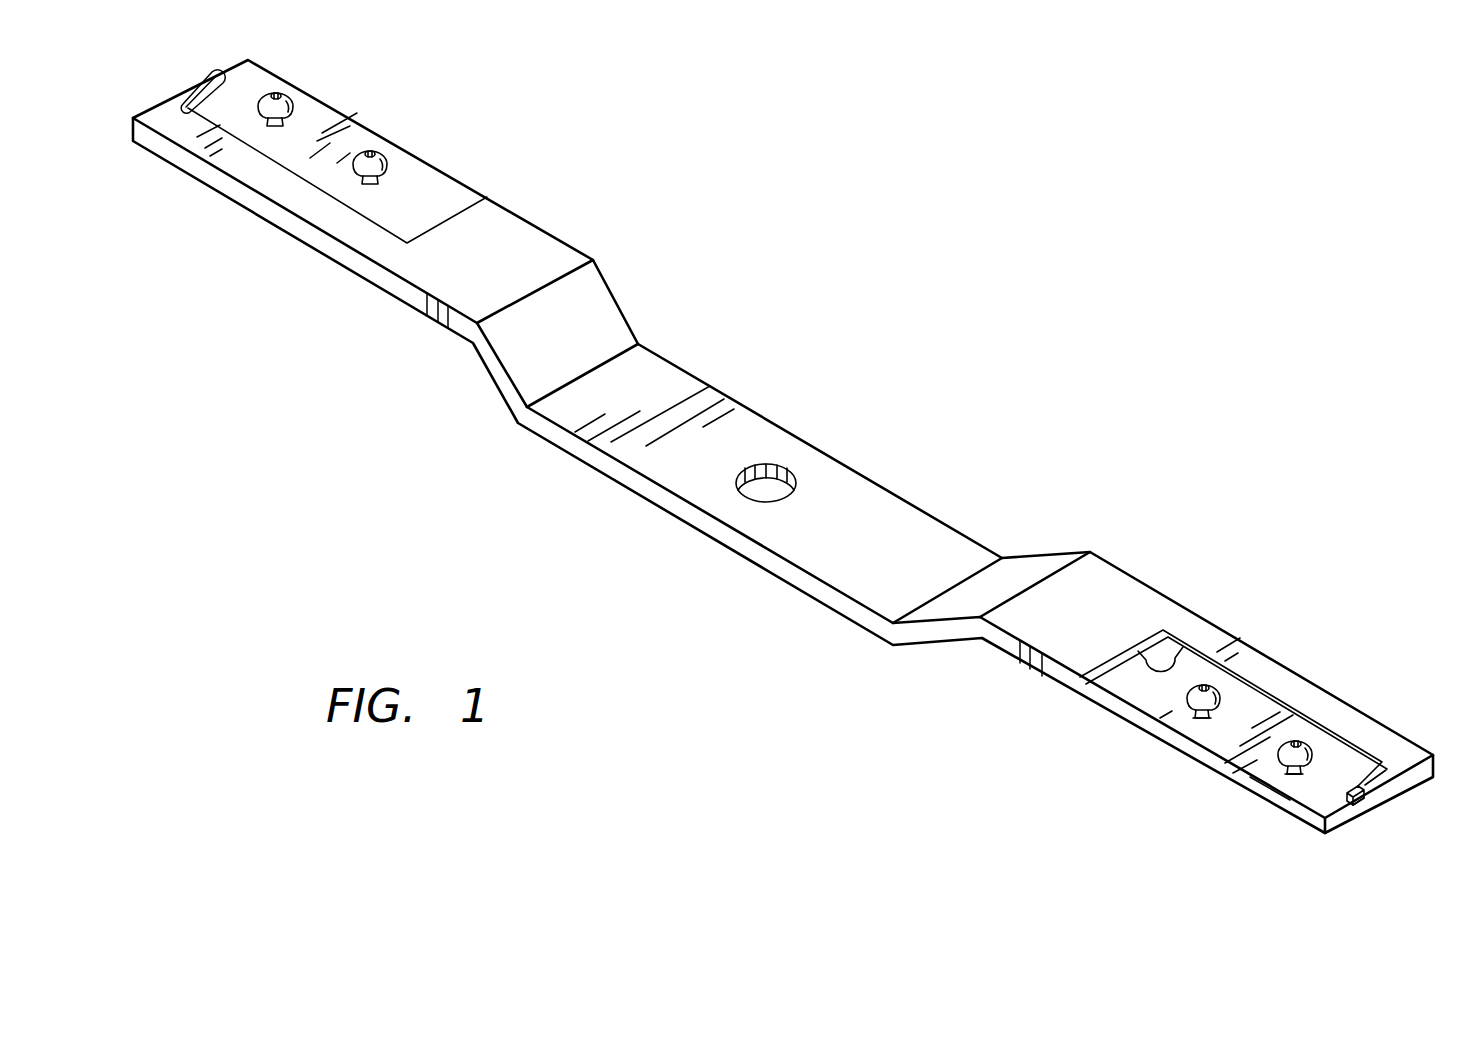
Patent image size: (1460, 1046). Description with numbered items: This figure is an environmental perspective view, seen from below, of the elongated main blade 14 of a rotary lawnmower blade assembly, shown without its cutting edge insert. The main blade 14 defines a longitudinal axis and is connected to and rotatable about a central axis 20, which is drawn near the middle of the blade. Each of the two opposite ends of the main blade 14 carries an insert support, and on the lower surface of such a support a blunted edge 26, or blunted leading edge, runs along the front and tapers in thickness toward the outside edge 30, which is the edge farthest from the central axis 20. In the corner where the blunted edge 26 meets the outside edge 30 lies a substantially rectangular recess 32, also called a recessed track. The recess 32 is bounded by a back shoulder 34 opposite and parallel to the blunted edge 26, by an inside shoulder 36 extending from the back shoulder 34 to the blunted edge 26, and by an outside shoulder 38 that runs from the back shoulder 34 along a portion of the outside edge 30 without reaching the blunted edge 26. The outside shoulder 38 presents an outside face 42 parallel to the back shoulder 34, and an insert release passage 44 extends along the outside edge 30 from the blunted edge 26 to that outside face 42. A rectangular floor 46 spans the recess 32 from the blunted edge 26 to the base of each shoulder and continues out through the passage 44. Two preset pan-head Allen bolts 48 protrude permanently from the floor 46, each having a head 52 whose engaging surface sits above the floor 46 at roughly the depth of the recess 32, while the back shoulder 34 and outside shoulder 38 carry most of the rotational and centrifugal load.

The main blade 14 is at (771, 361).
The central axis 20 is at (768, 490).
The blunted edge 26 is at (1268, 798).
The outside edge 30 is at (1377, 787).
The recess 32 is at (1168, 718).
The back shoulder 34 is at (1243, 686).
The inside shoulder 36 is at (1165, 663).
The outside shoulder 38 is at (1380, 777).
The outside face 42 is at (1343, 798).
The insert release passage 44 is at (1342, 808).
The floor 46 is at (1292, 774).
The bolts 48 is at (1197, 719).
The head 52 is at (1295, 742).